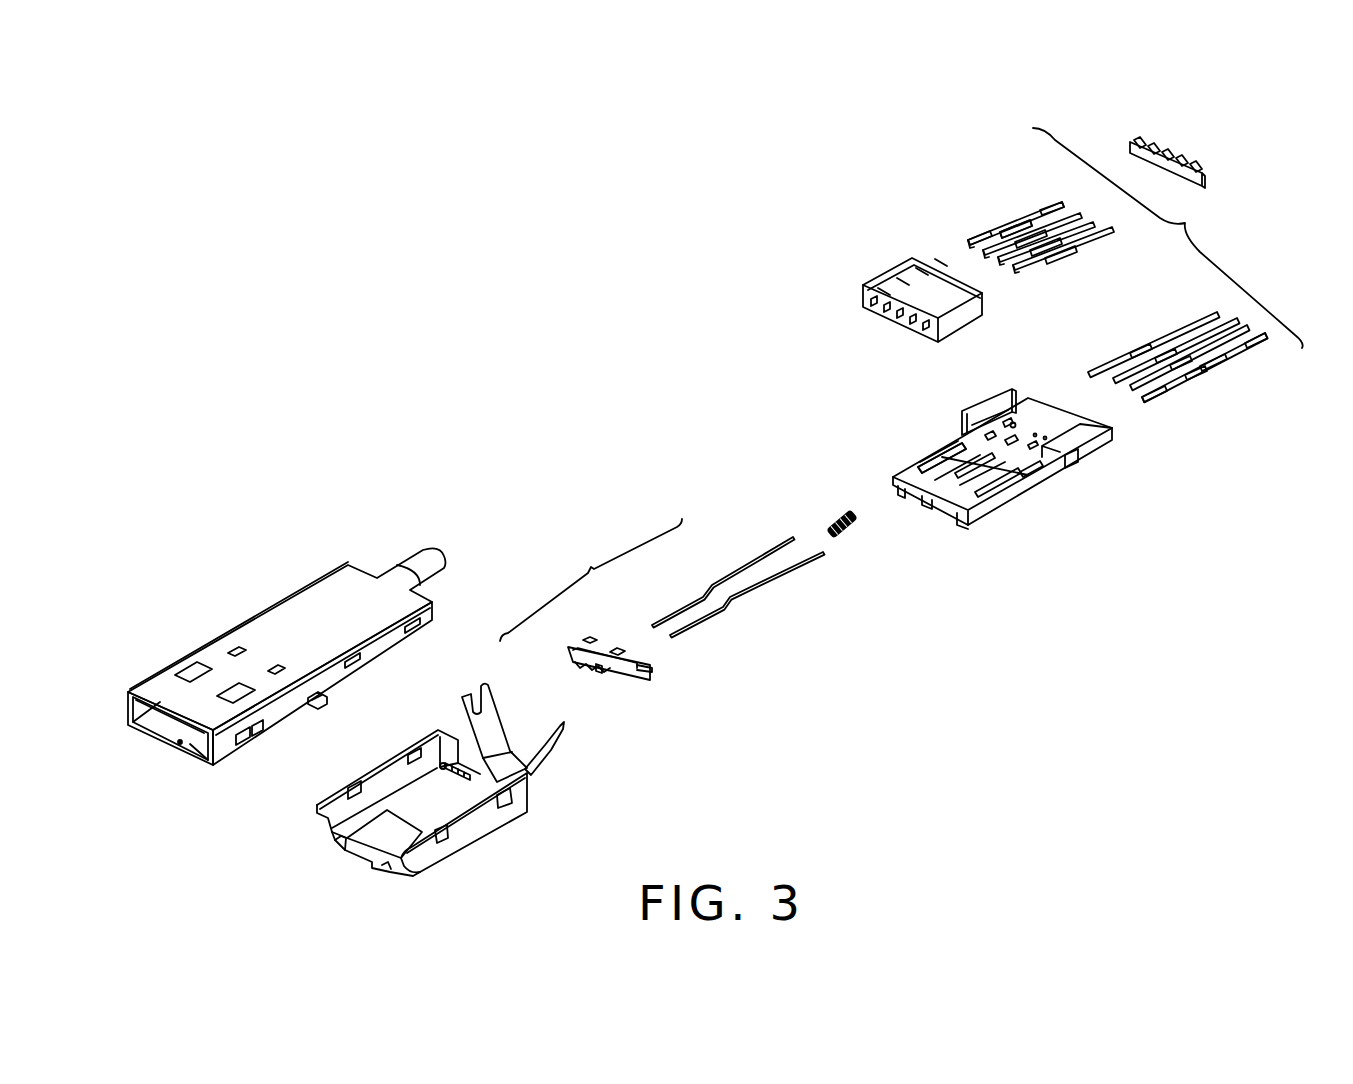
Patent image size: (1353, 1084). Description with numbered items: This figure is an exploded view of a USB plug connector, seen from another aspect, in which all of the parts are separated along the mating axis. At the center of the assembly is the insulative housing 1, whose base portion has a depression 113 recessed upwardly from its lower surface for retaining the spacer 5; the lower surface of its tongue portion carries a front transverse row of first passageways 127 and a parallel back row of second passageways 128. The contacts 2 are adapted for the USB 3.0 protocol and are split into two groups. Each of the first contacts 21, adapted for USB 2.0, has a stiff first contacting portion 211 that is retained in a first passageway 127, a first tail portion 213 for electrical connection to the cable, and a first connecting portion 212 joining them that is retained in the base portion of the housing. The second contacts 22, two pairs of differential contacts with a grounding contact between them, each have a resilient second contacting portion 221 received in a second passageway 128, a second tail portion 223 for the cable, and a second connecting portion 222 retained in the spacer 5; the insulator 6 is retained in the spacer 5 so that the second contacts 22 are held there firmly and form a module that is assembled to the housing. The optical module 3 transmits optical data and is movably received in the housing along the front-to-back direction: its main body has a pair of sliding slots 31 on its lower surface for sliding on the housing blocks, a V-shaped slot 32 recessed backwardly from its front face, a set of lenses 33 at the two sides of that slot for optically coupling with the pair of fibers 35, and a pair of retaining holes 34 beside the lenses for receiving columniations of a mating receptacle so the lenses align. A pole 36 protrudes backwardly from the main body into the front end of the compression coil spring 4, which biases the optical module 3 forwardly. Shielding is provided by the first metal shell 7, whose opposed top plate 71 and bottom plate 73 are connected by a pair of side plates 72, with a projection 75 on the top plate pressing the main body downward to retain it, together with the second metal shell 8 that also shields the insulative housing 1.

The insulative housing 1 is at (927, 415).
The depression 113 is at (1005, 422).
The first passageways 127 is at (935, 467).
The second passageways 128 is at (1040, 478).
The contacts 2 is at (1168, 238).
The first contacts 21 is at (1137, 335).
The first contacting portion 211 is at (1157, 390).
The first connecting portion 212 is at (1217, 365).
The first tail portion 213 is at (1260, 338).
The second contacts 22 is at (1013, 192).
The second contacting portion 221 is at (982, 230).
The second connecting portion 222 is at (1018, 220).
The second tail portion 223 is at (1048, 202).
The optical module 3 is at (591, 580).
The sliding slots 31 is at (590, 638).
The V-shaped slot 32 is at (600, 667).
The lenses 33 is at (582, 663).
The retaining holes 34 is at (567, 653).
The fibers 35 is at (718, 580).
The pole 36 is at (627, 647).
The compression coil spring 4 is at (857, 528).
The spacer 5 is at (882, 263).
The insulator 6 is at (1122, 138).
The first metal shell 7 is at (225, 620).
The top plate 71 is at (157, 725).
The side plates 72 is at (288, 712).
The bottom plate 73 is at (290, 608).
The projection 75 is at (180, 742).
The second metal shell 8 is at (397, 733).